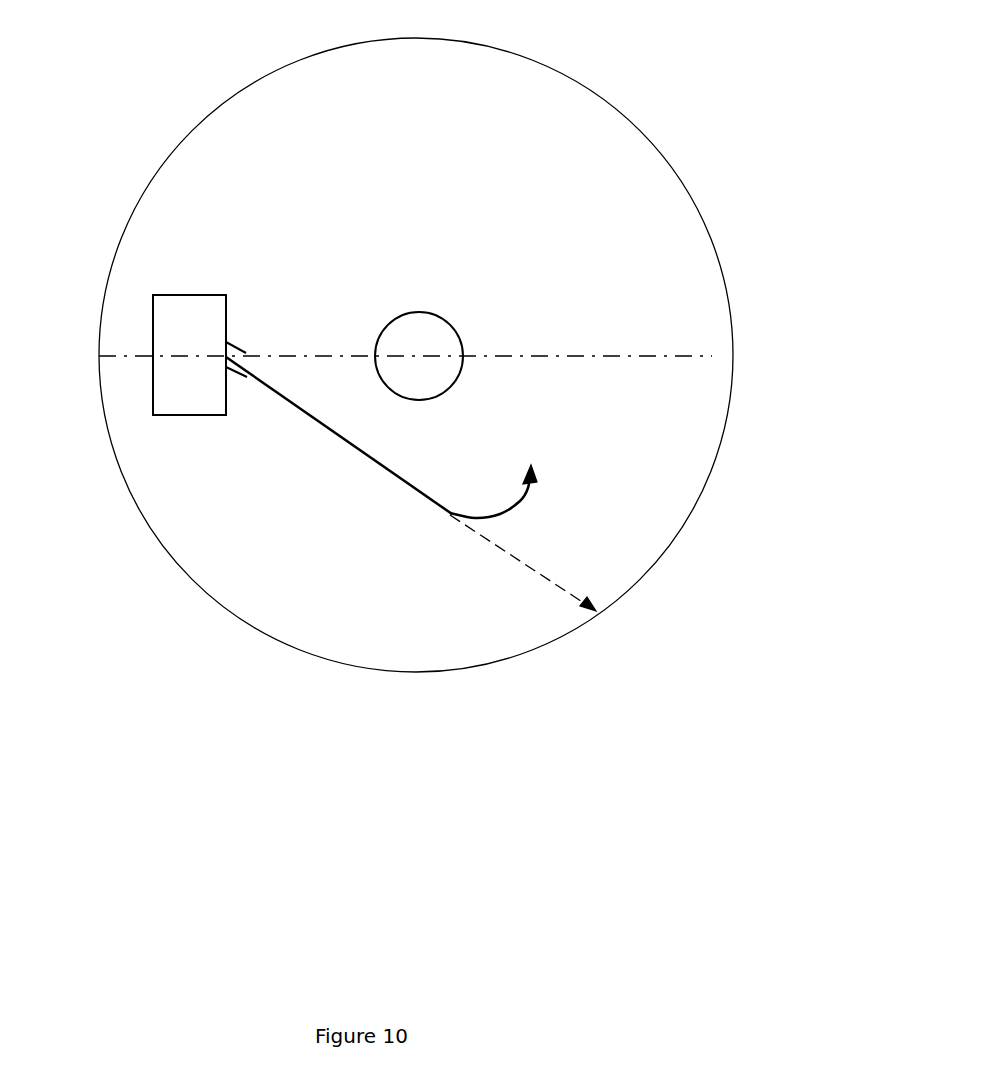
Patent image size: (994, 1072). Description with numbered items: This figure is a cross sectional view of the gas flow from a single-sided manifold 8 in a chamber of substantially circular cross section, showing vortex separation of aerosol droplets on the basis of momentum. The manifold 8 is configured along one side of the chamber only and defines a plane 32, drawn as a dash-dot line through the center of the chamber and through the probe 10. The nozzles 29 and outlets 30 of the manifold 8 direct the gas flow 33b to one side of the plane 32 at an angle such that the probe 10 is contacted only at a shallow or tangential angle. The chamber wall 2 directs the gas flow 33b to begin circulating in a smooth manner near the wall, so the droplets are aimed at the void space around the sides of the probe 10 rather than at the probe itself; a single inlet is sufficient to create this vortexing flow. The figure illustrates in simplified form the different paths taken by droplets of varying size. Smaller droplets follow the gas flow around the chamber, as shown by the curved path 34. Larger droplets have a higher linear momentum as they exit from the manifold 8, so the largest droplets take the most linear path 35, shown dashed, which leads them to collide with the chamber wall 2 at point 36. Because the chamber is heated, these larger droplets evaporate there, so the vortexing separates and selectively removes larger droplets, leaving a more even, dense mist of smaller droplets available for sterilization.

The chamber wall 2 is at (540, 645).
The manifold 8 is at (177, 382).
The probe 10 is at (420, 312).
The nozzles 29 is at (247, 375).
The outlets 30 is at (250, 357).
The plane 32 is at (707, 357).
The gas flow 33b is at (373, 465).
The path 34 is at (523, 502).
The linear path 35 is at (533, 570).
The point 36 is at (597, 613).